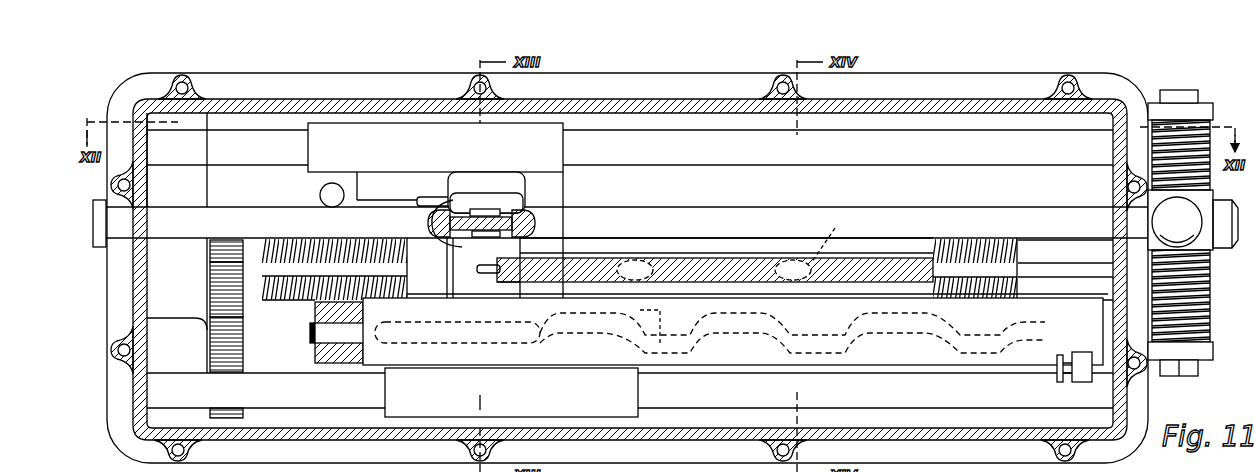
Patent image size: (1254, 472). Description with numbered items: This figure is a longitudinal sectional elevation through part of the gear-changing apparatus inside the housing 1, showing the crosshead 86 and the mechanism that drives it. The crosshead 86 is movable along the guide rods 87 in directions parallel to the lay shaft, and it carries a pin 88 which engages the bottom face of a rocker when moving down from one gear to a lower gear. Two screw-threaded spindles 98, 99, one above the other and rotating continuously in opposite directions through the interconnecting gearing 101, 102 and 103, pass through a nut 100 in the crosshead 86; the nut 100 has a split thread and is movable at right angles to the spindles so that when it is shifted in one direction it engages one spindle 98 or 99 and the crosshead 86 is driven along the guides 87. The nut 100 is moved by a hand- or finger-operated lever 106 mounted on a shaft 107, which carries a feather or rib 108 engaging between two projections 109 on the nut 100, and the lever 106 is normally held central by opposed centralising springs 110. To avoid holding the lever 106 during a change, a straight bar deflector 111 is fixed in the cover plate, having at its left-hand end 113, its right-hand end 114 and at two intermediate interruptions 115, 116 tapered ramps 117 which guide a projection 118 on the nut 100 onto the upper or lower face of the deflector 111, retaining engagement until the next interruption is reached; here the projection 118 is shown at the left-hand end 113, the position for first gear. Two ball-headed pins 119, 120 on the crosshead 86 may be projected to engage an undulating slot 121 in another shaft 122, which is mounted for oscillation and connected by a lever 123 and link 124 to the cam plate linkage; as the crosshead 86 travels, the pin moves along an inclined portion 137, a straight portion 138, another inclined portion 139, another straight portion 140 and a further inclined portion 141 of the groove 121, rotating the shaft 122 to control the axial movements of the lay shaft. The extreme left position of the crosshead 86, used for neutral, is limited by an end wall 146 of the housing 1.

The housing 1 is at (938, 99).
The crosshead 86 is at (435, 161).
The guide rods 87 is at (986, 412).
The pin 88 is at (322, 200).
The upper screw-threaded spindle 98 is at (275, 240).
The lower screw-threaded spindle 99 is at (282, 308).
The nut 100 is at (512, 193).
The interconnecting gearing 101 is at (210, 251).
The interconnecting gearing 102 is at (210, 293).
The interconnecting gearing 103 is at (210, 350).
The hand- or finger-operated lever 106 is at (665, 220).
The shaft 107 is at (993, 203).
The feather or rib 108 is at (535, 222).
The projections 109 is at (468, 203).
The centralising springs 110 is at (1208, 305).
The straight bar deflector 111 is at (716, 245).
The left-hand end of deflector 113 is at (497, 278).
The right-hand end of deflector 114 is at (970, 300).
The intermediate gap or interruption 115 is at (645, 262).
The intermediate gap or interruption 116 is at (829, 237).
The tapered ramps 117 is at (642, 282).
The projection 118 is at (479, 259).
The ball-headed pin 119 is at (540, 340).
The ball-headed pin 120 is at (592, 345).
The undulating slot 121 is at (888, 332).
The shaft 122 is at (760, 355).
The lever 123 is at (1057, 380).
The link 124 is at (1080, 352).
The inclined portion of groove 137 is at (632, 345).
The straight portion of groove 138 is at (666, 355).
The inclined portion of groove 139 is at (700, 345).
The straight portion of groove 140 is at (740, 320).
The inclined portion of groove 141 is at (790, 335).
The end wall 146 is at (148, 198).